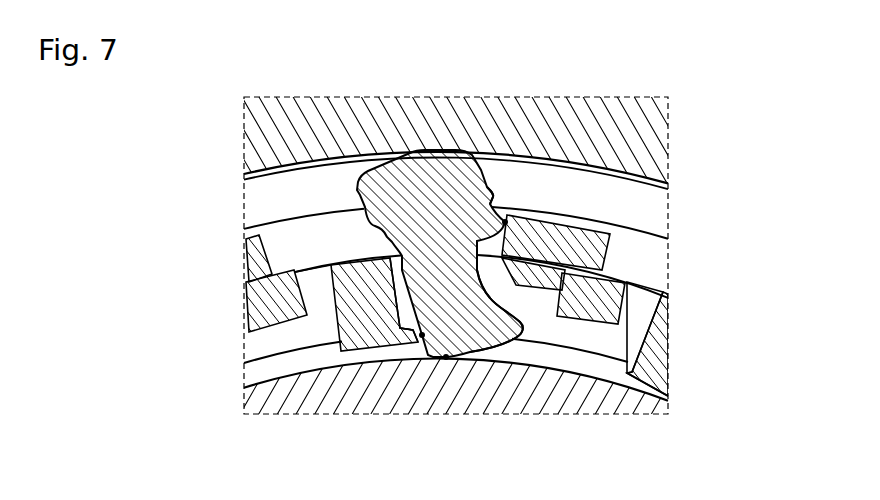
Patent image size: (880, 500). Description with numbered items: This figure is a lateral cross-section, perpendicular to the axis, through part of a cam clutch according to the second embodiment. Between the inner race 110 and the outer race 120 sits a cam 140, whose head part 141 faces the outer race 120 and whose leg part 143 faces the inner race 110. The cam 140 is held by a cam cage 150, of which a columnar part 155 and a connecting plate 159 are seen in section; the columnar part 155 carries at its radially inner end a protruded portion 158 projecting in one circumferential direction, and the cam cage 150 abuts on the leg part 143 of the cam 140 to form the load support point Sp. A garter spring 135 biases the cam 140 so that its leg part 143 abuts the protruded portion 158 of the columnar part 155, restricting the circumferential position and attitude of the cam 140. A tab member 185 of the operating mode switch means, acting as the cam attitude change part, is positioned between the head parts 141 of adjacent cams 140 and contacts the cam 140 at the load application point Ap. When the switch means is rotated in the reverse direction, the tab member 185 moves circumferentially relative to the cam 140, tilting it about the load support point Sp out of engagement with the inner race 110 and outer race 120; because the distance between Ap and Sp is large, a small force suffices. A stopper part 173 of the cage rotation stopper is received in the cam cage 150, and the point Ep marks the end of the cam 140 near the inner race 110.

The inner race 110 is at (322, 414).
The outer race 120 is at (606, 118).
The garter spring 135 is at (265, 207).
The cam 140 is at (387, 237).
The head part 141 is at (383, 176).
The leg part 143 is at (501, 346).
The cam cage 150 is at (333, 300).
The columnar part 155 is at (337, 326).
The protruded portion 158 is at (415, 342).
The connecting plate 159 is at (540, 291).
The stopper part 173 is at (580, 322).
The tab member 185 is at (605, 247).
The load application point Ap is at (491, 200).
The load support point Sp is at (423, 340).
The end point Ep is at (447, 360).